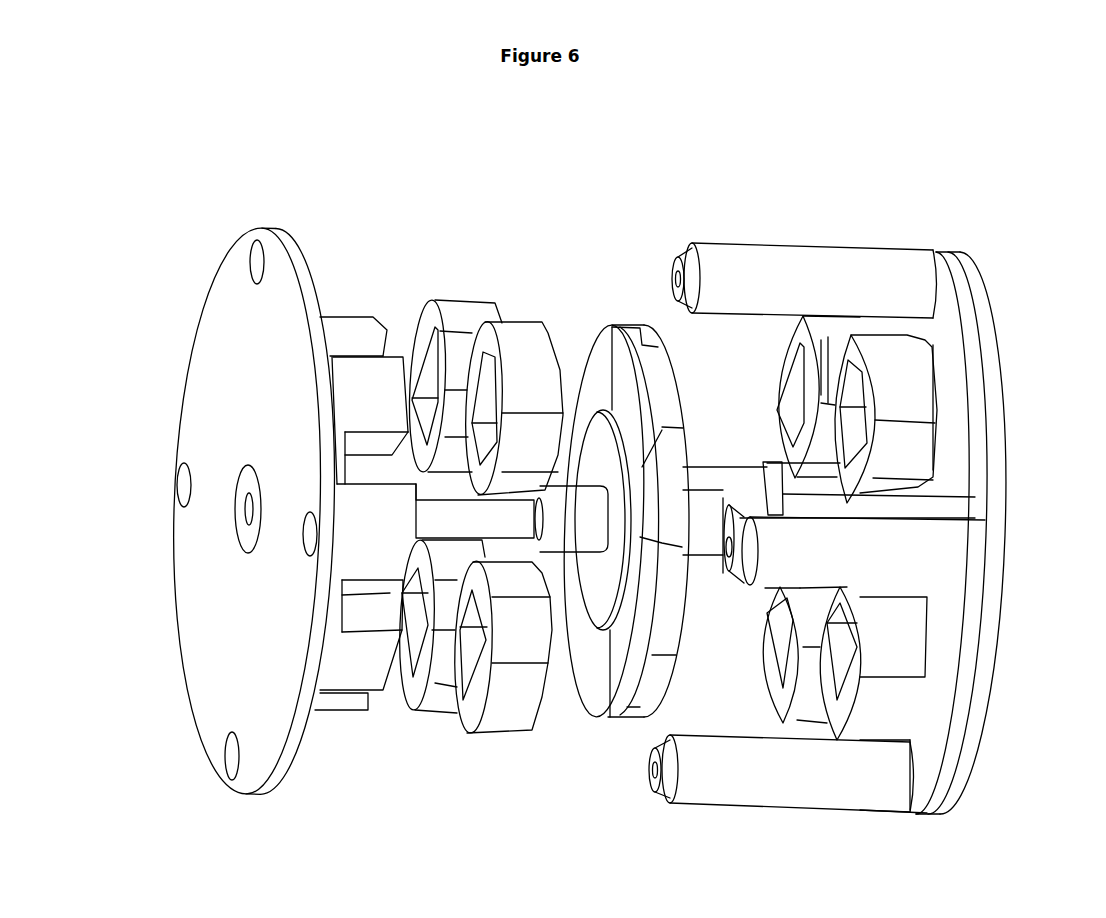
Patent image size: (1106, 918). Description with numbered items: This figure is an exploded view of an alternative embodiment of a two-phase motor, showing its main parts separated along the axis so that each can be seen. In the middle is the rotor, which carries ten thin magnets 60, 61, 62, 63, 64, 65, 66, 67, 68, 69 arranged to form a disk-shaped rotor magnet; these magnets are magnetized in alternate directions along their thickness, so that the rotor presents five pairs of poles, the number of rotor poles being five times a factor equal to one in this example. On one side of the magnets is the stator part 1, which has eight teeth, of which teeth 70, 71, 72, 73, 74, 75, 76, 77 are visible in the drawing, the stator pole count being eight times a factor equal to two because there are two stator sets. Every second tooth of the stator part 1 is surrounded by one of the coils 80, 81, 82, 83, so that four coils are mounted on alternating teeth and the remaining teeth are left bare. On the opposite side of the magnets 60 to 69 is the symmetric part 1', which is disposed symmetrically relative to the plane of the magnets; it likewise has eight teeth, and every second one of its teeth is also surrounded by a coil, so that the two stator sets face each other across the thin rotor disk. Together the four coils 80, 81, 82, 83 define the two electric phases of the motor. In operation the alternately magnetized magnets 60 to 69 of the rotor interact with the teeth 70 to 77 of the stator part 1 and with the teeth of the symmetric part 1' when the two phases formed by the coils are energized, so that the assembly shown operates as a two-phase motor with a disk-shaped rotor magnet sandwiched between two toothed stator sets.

The symmetric part 1' is at (272, 478).
The stator part 1 is at (983, 533).
The thin magnet 60 is at (630, 710).
The thin magnet 61 is at (613, 713).
The thin magnet 62 is at (580, 675).
The thin magnet 63 is at (572, 653).
The thin magnet 64 is at (578, 413).
The thin magnet 65 is at (598, 373).
The thin magnet 66 is at (623, 347).
The thin magnet 67 is at (645, 400).
The thin magnet 68 is at (656, 470).
The thin magnet 69 is at (653, 580).
The tooth 70 is at (927, 510).
The tooth 71 is at (877, 387).
The tooth 72 is at (833, 345).
The tooth 73 is at (795, 405).
The tooth 74 is at (771, 503).
The tooth 75 is at (777, 650).
The tooth 76 is at (807, 707).
The tooth 77 is at (840, 707).
The coil 80 is at (910, 360).
The coil 81 is at (793, 335).
The coil 82 is at (768, 590).
The coil 83 is at (890, 657).